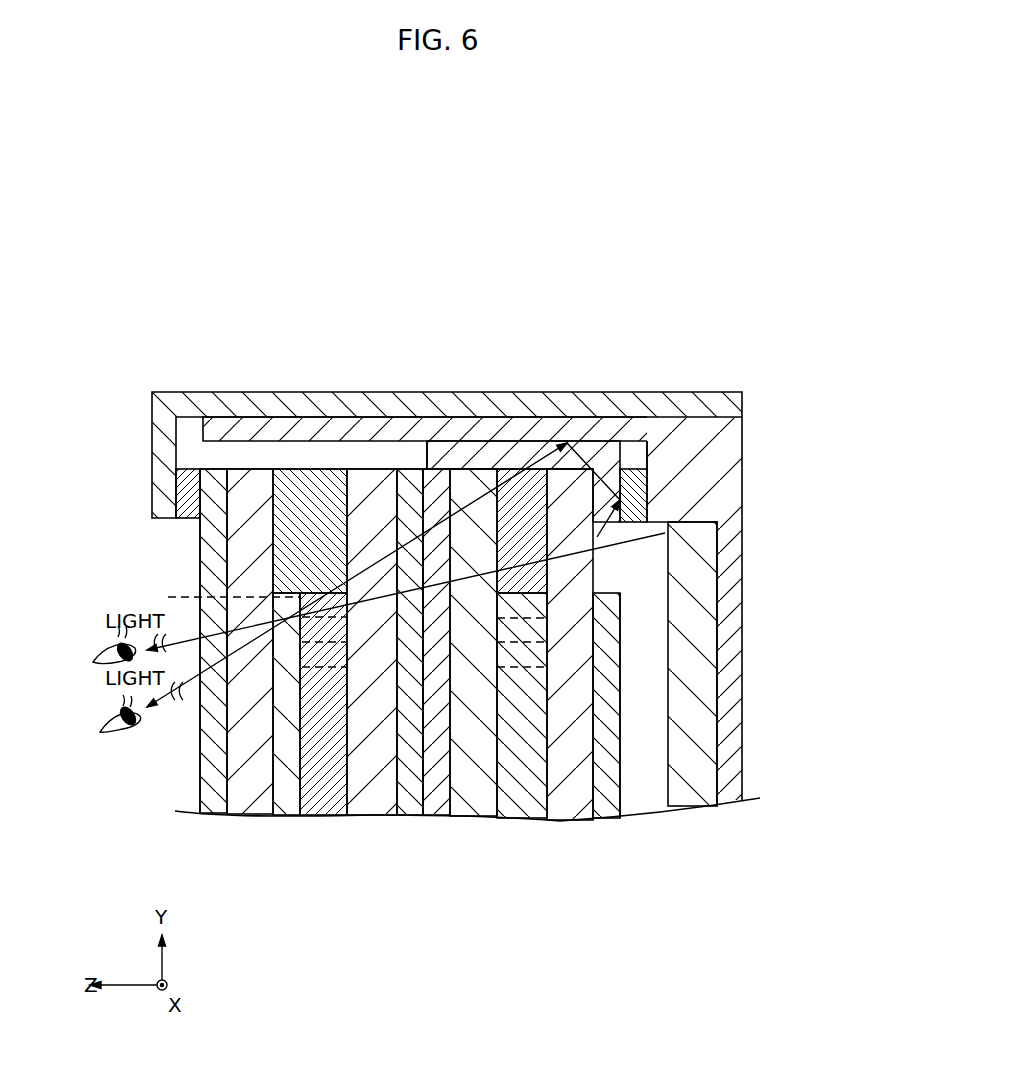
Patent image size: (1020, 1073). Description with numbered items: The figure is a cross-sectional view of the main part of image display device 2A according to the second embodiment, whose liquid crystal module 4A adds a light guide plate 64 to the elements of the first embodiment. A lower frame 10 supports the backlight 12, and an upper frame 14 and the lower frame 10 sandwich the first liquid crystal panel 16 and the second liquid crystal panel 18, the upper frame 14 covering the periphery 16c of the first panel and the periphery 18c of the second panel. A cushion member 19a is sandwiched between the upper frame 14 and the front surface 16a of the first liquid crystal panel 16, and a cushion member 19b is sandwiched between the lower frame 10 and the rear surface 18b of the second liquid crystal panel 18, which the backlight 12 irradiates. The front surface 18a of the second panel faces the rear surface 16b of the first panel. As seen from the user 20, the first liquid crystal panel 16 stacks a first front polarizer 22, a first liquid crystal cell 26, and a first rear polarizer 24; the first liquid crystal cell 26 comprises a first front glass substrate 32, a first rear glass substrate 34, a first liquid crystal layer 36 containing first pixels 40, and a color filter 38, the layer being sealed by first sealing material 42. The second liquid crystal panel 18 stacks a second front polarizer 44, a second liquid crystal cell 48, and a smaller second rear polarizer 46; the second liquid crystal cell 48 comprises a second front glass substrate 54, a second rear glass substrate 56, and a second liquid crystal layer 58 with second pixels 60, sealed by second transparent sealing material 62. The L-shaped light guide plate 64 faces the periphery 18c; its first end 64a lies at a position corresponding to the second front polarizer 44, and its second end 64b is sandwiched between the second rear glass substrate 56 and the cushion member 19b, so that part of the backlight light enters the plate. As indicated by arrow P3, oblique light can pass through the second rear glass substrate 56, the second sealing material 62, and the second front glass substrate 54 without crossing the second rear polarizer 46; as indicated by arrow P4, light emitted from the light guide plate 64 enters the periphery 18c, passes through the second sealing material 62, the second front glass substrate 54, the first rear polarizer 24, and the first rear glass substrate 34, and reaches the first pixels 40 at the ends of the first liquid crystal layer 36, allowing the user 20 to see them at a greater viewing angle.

The image display device 2A is at (724, 348).
The liquid crystal module 4A is at (762, 420).
The lower frame 10 is at (742, 625).
The backlight 12 is at (705, 670).
The upper frame 14 is at (165, 456).
The first liquid crystal panel 16 is at (309, 699).
The front surface 16a is at (200, 797).
The rear surface 16b is at (425, 500).
The periphery 16c is at (357, 470).
The second liquid crystal panel 18 is at (547, 699).
The front surface 18a is at (425, 762).
The rear surface 18b is at (647, 730).
The periphery 18c is at (470, 472).
The cushion member 19a is at (190, 497).
The cushion member 19b is at (650, 485).
The user 20 is at (100, 708).
The first front polarizer 22 is at (214, 808).
The first rear polarizer 24 is at (401, 681).
The first liquid crystal cell 26 is at (312, 681).
The first front glass substrate 32 is at (249, 808).
The first rear glass substrate 34 is at (372, 667).
The first liquid crystal layer 36 is at (322, 808).
The color filter 38 is at (285, 808).
The first pixels 40 is at (219, 595).
The first sealing material 42 is at (307, 482).
The second front polarizer 44 is at (439, 808).
The second rear polarizer 46 is at (606, 812).
The second liquid crystal cell 48 is at (521, 681).
The second front glass substrate 54 is at (477, 808).
The second rear glass substrate 56 is at (568, 667).
The second liquid crystal layer 58 is at (514, 810).
The second pixels 60 is at (505, 617).
The second sealing material 62 is at (497, 472).
The light guide plate 64 is at (557, 443).
The first end 64a is at (428, 448).
The second end 64b is at (648, 510).
The arrow P3 is at (603, 545).
The arrow P4 is at (190, 686).